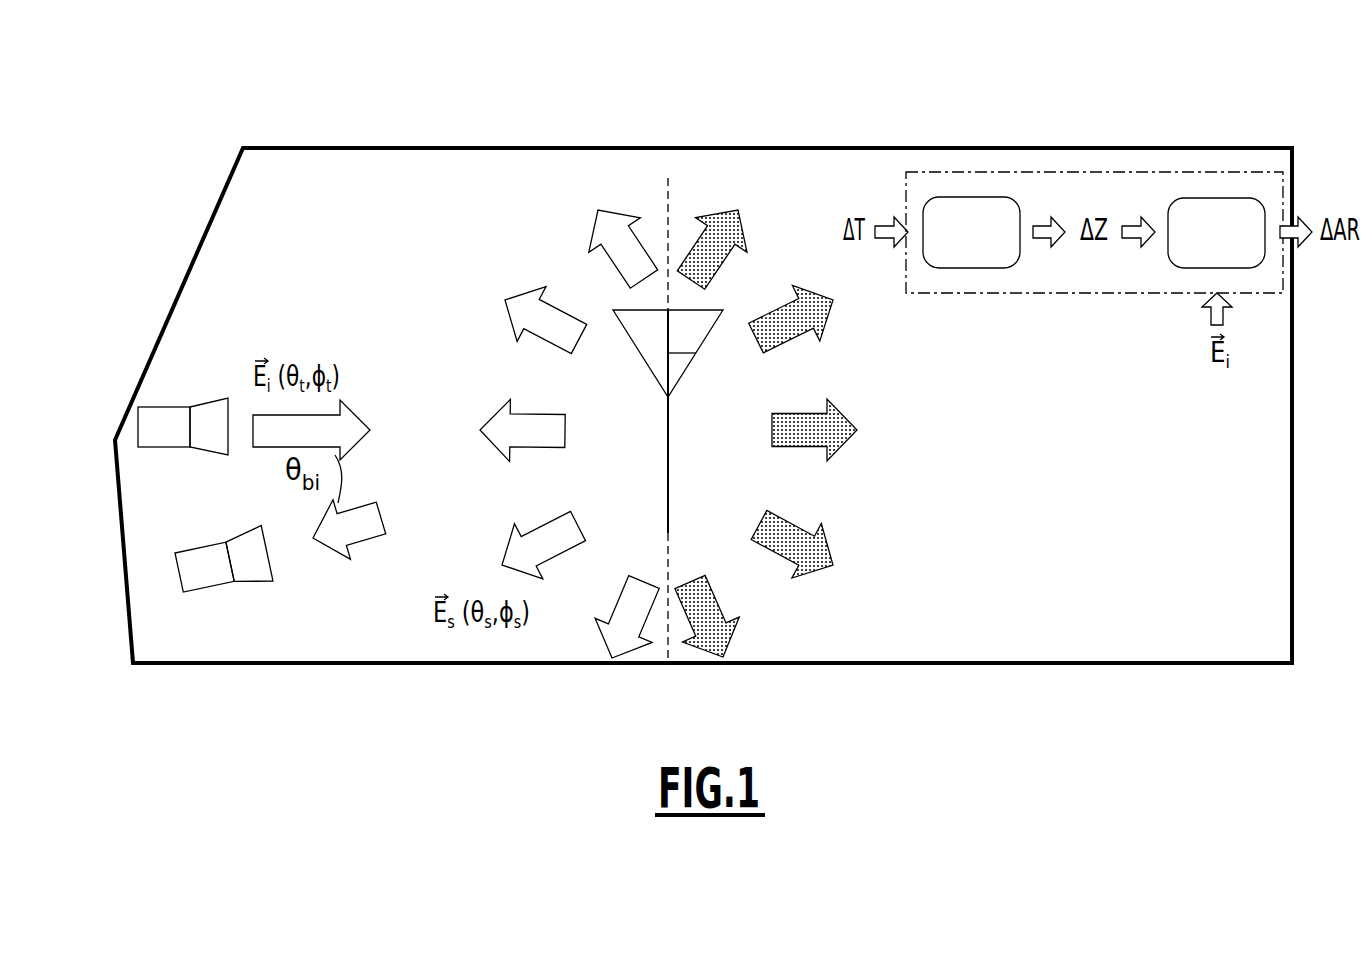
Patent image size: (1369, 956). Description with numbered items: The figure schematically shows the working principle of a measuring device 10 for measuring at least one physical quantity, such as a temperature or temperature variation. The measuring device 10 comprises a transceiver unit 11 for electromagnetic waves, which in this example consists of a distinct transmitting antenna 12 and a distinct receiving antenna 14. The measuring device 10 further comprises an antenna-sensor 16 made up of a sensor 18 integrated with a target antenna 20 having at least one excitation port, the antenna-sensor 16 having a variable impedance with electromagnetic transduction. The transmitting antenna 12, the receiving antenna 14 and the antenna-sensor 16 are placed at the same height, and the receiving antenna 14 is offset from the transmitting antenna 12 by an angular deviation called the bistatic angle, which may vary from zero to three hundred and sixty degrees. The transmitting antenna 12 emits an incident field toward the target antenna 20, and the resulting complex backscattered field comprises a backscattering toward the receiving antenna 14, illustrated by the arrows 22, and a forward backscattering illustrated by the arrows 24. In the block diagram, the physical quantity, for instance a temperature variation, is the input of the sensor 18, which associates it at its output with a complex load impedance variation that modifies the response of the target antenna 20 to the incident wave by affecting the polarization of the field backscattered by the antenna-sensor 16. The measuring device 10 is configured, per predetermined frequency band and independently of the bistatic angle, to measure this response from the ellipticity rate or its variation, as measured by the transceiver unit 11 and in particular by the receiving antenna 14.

The measuring device 10 is at (393, 148).
The transceiver unit 11 is at (150, 512).
The transmitting antenna 12 is at (166, 405).
The receiving antenna 14 is at (198, 548).
The antenna-sensor 16 is at (1093, 293).
The sensor 18 is at (975, 268).
The target antenna 20 is at (1190, 268).
The arrows (backscattering) 22 is at (513, 322).
The arrows (forward backscattering) 24 is at (816, 570).